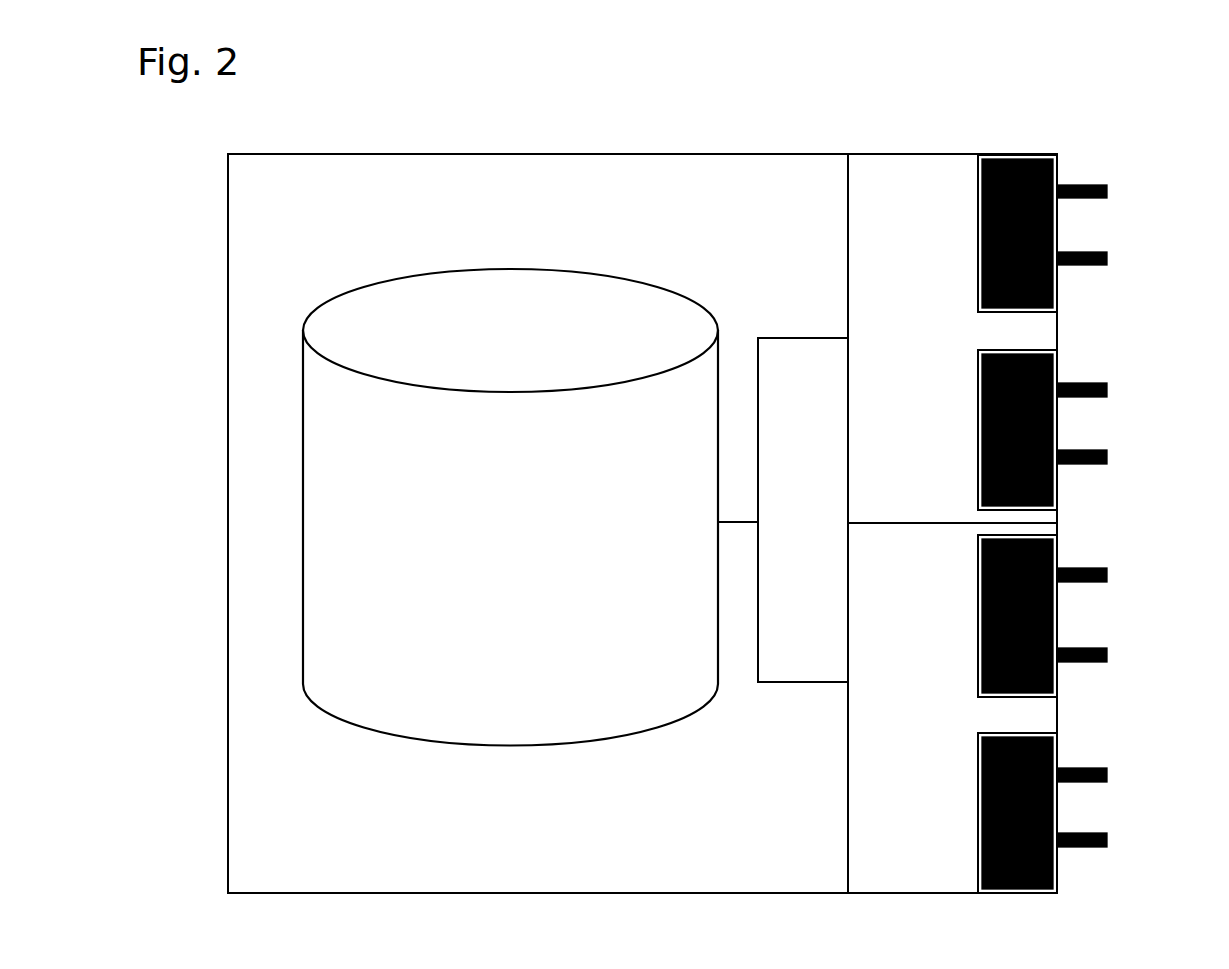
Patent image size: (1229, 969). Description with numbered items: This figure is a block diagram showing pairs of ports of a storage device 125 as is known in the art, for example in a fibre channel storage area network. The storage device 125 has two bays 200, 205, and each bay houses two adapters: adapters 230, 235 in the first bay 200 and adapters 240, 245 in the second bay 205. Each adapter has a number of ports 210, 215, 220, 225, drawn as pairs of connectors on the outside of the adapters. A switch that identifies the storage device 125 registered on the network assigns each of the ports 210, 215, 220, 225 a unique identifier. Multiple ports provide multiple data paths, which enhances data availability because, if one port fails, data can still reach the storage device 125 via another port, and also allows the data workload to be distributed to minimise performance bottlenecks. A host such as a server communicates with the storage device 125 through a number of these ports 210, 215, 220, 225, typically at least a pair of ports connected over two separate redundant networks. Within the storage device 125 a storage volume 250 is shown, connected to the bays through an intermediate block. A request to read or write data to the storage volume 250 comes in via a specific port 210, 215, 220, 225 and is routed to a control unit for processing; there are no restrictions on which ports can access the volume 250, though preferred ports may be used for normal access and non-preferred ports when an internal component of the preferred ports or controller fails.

The storage device 125 is at (253, 153).
The bay 200 is at (915, 203).
The bay 205 is at (915, 565).
The port 210 is at (1105, 183).
The port 215 is at (1099, 382).
The port 220 is at (1100, 567).
The port 225 is at (1100, 766).
The adapter 230 is at (976, 258).
The adapter 235 is at (976, 403).
The adapter 240 is at (977, 630).
The adapter 245 is at (977, 782).
The storage volume 250 is at (388, 278).